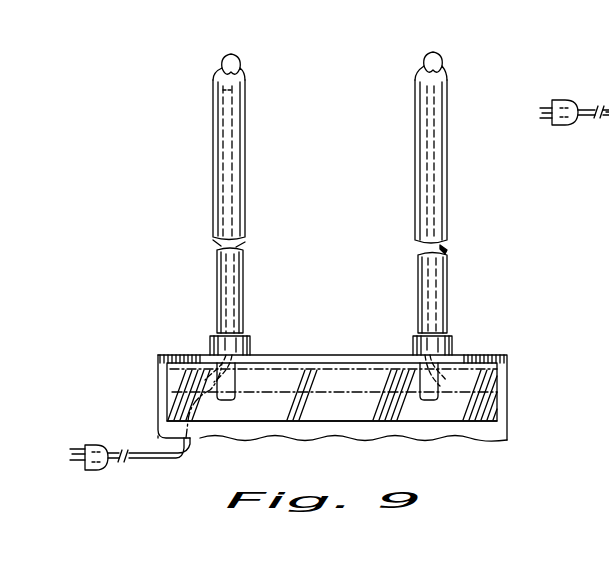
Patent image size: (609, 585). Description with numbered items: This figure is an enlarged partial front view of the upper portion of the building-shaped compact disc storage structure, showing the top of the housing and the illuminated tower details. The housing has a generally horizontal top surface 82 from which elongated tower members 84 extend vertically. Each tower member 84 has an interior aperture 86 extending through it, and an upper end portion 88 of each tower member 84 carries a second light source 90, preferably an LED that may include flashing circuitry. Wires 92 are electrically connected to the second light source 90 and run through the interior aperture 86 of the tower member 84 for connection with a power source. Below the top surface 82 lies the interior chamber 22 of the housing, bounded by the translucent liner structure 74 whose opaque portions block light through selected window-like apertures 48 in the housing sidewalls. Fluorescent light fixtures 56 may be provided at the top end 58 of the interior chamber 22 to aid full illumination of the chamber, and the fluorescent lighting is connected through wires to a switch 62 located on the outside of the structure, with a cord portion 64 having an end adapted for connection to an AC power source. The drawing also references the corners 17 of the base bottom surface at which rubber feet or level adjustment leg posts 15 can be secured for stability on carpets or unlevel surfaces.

The level adjustment leg posts 15 is at (608, 222).
The corners 17 is at (608, 175).
The interior chamber 22 is at (440, 410).
The apertures 48 is at (472, 377).
The florescent light fixtures 56 is at (348, 380).
The top end 58 is at (178, 395).
The switch 62 is at (608, 64).
The cord portion 64 is at (590, 110).
The liner structure 74 is at (507, 410).
The top surface 82 is at (470, 355).
The tower members 84 is at (245, 205).
The interior aperture 86 is at (214, 248).
The upper end portion 88 is at (245, 80).
The second light source 90 is at (236, 57).
The wires 92 is at (233, 128).